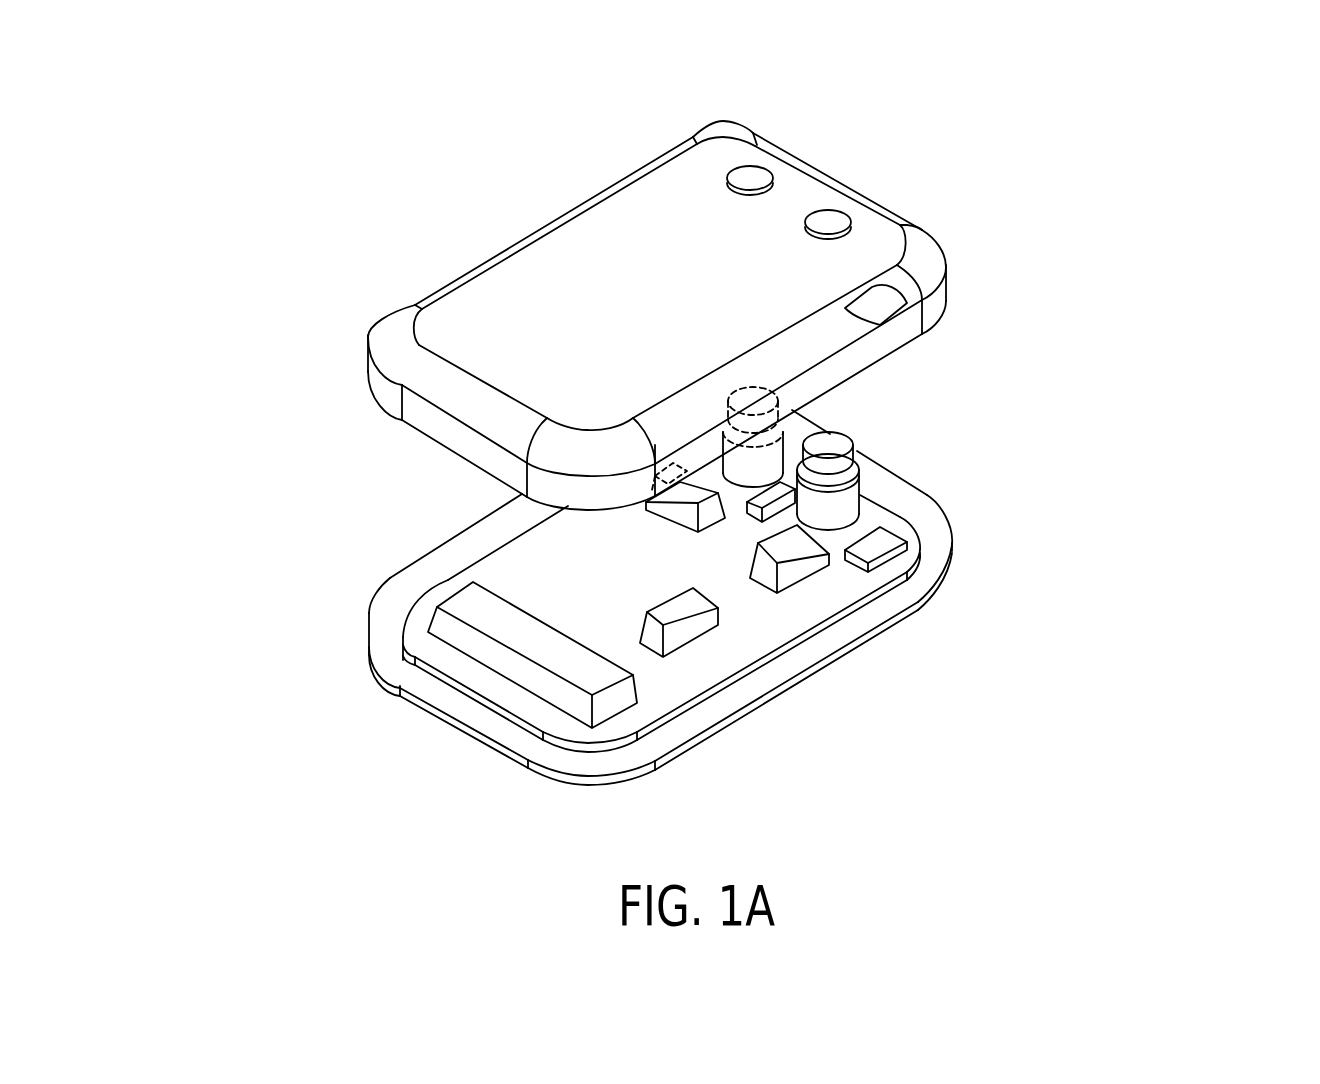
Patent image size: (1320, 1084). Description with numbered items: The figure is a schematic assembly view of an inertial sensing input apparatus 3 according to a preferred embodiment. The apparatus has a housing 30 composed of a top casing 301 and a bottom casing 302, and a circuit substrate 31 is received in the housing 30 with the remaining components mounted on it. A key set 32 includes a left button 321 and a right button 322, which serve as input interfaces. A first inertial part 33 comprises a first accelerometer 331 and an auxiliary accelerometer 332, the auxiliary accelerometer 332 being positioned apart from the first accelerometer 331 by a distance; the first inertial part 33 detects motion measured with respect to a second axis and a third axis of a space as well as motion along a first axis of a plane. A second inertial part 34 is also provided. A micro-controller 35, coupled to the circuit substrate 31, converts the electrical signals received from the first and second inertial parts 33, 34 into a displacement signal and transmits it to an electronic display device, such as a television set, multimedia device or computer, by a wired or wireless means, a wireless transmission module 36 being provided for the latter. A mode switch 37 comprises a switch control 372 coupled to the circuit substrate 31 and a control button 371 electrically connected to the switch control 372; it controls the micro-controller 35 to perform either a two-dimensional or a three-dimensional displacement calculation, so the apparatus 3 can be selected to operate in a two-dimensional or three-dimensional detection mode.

The inertial sensing input apparatus 3 is at (349, 189).
The housing 30 is at (240, 495).
The top casing 301 is at (383, 400).
The bottom casing 302 is at (387, 637).
The circuit substrate 31 is at (660, 697).
The key set 32 is at (953, 398).
The left button 321 is at (772, 372).
The right button 322 is at (862, 458).
The first inertial part 33 is at (990, 658).
The first accelerometer 331 is at (795, 570).
The auxiliary accelerometer 332 is at (705, 625).
The second inertial part 34 is at (673, 508).
The micro-controller 35 is at (498, 662).
The wireless transmission module 36 is at (757, 518).
The mode switch 37 is at (1178, 377).
The control button 371 is at (878, 312).
The switch control 372 is at (887, 533).